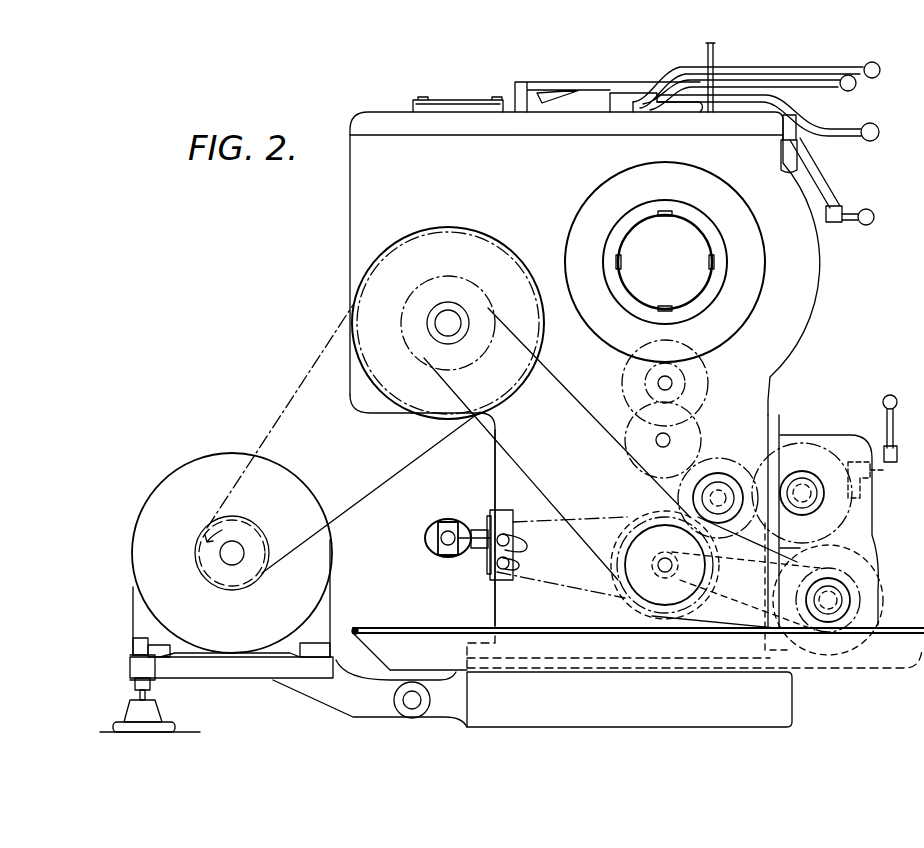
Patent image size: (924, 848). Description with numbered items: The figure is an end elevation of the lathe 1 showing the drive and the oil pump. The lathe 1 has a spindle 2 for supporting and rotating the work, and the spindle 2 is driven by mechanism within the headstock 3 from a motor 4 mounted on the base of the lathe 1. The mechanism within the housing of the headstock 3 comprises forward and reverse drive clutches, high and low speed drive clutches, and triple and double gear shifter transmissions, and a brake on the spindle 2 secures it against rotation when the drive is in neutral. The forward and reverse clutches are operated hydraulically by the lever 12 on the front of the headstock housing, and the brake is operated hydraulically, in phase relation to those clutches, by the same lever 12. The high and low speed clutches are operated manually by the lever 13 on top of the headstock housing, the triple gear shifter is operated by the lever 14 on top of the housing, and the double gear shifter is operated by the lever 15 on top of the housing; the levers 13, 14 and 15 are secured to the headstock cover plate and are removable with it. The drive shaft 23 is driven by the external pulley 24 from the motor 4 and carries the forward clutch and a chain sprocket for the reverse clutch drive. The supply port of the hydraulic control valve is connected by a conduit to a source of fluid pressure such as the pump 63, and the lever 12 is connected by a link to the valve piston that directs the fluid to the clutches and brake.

The lathe 1 is at (488, 471).
The spindle 2 is at (705, 240).
The headstock 3 is at (815, 303).
The motor 4 is at (182, 464).
The lever 12 is at (852, 226).
The lever 13 is at (830, 88).
The lever 14 is at (826, 68).
The lever 15 is at (852, 140).
The drive shaft 23 is at (452, 312).
The external pulley 24 is at (370, 266).
The pump 63 is at (427, 528).